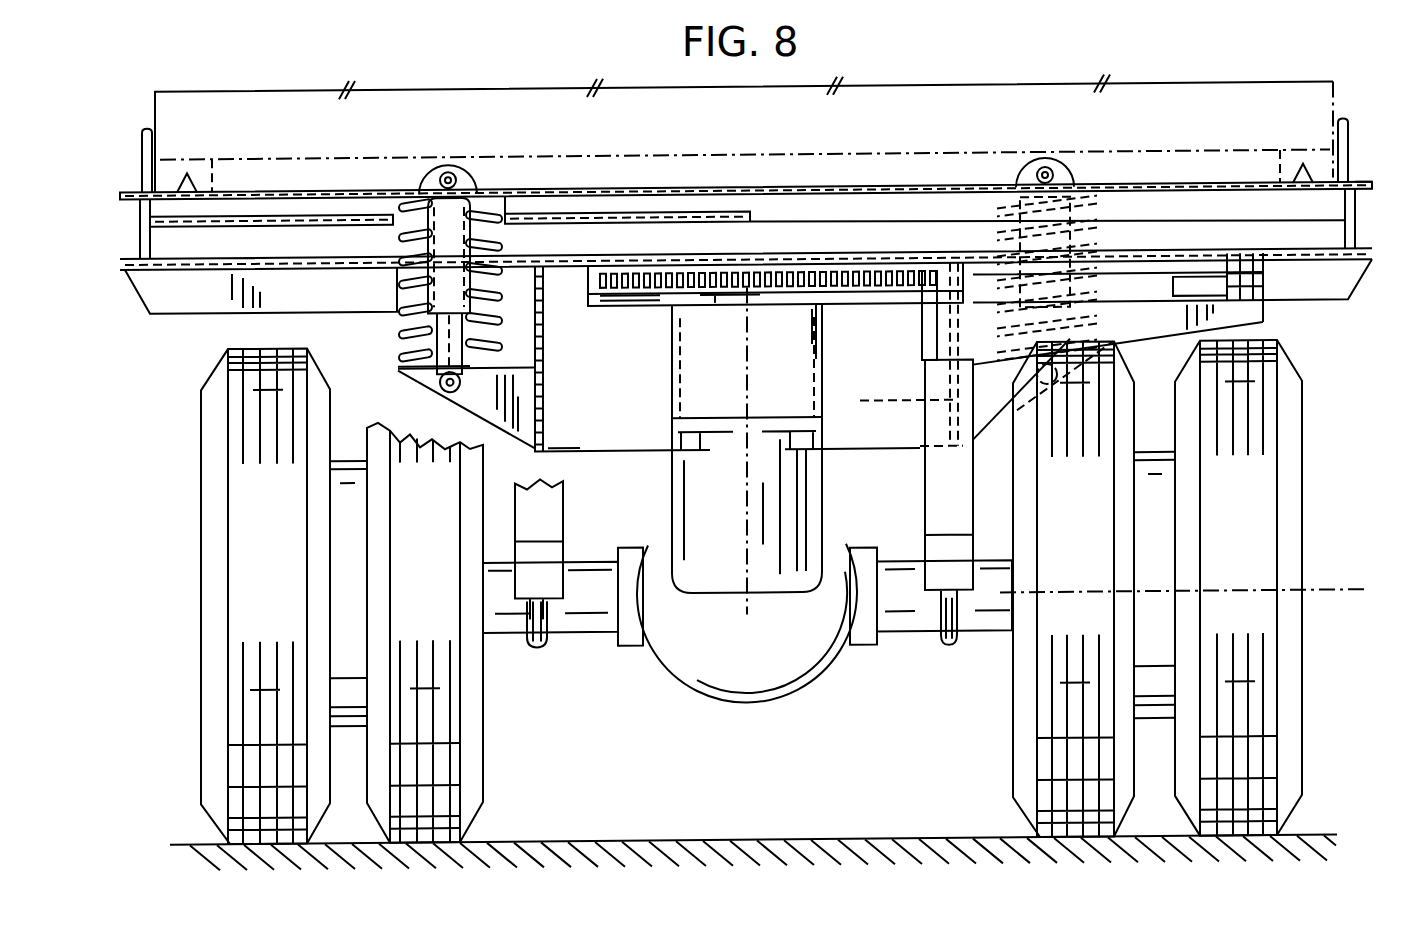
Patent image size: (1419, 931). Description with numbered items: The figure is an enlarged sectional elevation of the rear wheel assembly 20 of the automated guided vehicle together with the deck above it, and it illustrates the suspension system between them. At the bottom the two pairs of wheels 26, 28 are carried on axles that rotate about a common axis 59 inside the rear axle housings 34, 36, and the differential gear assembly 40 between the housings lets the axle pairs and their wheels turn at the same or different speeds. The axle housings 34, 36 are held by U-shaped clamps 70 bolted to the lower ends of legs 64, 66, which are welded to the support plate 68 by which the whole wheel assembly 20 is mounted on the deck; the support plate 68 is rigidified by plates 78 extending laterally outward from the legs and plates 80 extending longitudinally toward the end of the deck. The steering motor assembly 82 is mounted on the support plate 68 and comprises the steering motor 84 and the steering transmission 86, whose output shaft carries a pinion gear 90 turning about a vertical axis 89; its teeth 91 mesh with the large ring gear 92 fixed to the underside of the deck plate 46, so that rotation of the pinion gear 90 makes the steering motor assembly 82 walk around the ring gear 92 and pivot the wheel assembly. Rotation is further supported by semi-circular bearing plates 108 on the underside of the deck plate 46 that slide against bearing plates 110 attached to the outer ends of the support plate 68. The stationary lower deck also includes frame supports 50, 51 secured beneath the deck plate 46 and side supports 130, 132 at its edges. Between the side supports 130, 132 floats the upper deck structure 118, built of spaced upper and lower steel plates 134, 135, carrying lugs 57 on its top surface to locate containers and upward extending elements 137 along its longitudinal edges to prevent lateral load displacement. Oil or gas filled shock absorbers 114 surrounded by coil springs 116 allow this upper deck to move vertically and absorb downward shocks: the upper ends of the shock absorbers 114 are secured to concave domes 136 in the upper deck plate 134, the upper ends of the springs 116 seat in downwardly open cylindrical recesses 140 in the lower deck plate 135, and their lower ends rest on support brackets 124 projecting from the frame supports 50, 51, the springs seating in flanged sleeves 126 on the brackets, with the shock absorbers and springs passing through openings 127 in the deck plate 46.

The rear wheel assembly 20 is at (820, 700).
The pair of wheels 26 is at (1263, 552).
The pair of wheels 28 is at (407, 513).
The rear axle housing 34 is at (903, 621).
The rear axle housing 36 is at (583, 619).
The differential gear assembly 40 is at (685, 660).
The deck plate 46 is at (1262, 252).
The frame support 50 is at (545, 408).
The frame support 51 is at (893, 407).
The lugs 57 is at (177, 176).
The common axis 59 is at (1317, 597).
The leg 64 is at (945, 492).
The leg 66 is at (553, 509).
The support plate 68 is at (1173, 305).
The U-shaped clamps 70 is at (538, 643).
The plates 78 is at (1247, 323).
The plates 80 is at (930, 335).
The steering motor assembly 82 is at (663, 397).
The steering motor 84 is at (793, 483).
The steering transmission 86 is at (823, 325).
The vertical axis 89 is at (750, 608).
The pinion gear 90 is at (768, 290).
The teeth 91 is at (720, 287).
The ring gear 92 is at (648, 272).
The bearing plates 108 is at (1240, 258).
The bearing plates 110 is at (1345, 296).
The shock absorbers 114 is at (460, 214).
The coil springs 116 is at (411, 203).
The upper deck structure 118 is at (312, 187).
The support brackets 124 is at (477, 406).
The flanged sleeves 126 is at (408, 352).
The openings 127 is at (387, 263).
The side support 130 is at (1358, 219).
The side support 132 is at (117, 215).
The upper deck plate 134 is at (250, 186).
The lower deck plate 135 is at (350, 211).
The domes 136 is at (450, 161).
The upward extending elements 137 is at (145, 145).
The cylindrical recesses 140 is at (518, 196).